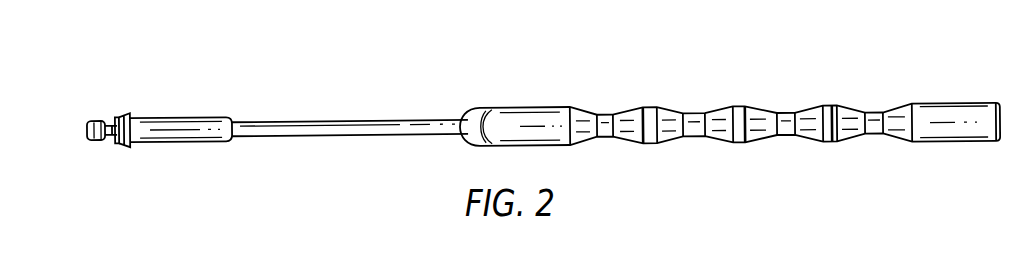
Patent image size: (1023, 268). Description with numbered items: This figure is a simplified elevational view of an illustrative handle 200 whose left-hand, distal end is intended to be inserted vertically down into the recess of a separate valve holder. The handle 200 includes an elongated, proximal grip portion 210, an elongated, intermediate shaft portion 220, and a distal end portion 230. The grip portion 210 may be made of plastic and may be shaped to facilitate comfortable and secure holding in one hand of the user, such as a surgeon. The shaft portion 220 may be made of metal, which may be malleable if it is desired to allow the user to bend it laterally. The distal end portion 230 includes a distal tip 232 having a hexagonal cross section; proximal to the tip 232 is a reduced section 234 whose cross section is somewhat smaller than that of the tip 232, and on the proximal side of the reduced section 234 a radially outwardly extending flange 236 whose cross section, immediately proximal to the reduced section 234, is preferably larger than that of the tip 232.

The handle 200 is at (772, 43).
The grip portion 210 is at (848, 103).
The shaft portion 220 is at (322, 122).
The distal end portion 230 is at (173, 161).
The distal tip 232 is at (100, 142).
The reduced section 234 is at (108, 138).
The flange 236 is at (126, 114).